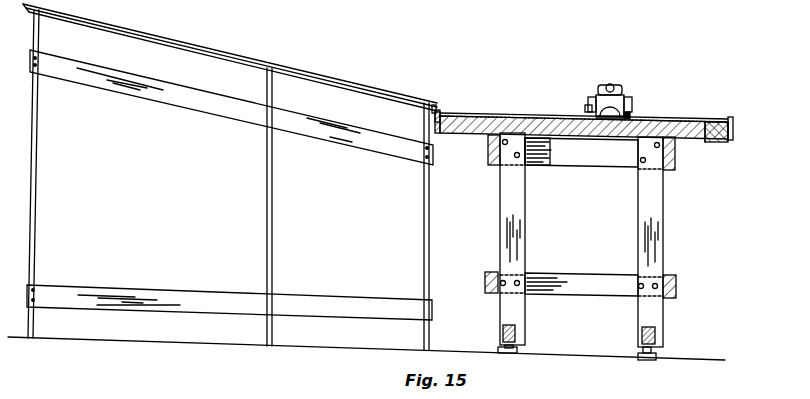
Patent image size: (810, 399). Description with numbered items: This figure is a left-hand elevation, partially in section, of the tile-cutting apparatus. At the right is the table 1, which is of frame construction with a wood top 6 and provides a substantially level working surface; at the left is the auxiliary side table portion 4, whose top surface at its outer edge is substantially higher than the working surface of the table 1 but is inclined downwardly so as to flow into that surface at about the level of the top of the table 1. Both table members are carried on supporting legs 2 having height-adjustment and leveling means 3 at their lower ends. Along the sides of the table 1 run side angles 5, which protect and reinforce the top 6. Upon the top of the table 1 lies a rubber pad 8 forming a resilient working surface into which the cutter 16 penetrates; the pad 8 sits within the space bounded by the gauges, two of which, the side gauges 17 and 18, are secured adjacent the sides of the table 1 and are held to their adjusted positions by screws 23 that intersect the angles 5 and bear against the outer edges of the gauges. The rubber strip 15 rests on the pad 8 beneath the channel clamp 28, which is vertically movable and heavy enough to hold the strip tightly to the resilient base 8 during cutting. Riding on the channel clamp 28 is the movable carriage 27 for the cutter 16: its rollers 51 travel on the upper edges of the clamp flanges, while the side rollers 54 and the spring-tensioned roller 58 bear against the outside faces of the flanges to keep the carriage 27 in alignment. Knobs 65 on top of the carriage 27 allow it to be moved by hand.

The table 1 is at (581, 217).
The supporting legs 2 is at (500, 229).
The height-adjustment and leveling means 3 is at (517, 350).
The auxiliary side table portion 4 is at (230, 180).
The side angles 5 is at (439, 134).
The wood top 6 is at (552, 140).
The rubber pad 8 is at (668, 120).
The strip 15 is at (232, 54).
The cutter 16 is at (623, 119).
The side gauge 17 is at (712, 121).
The side gauge 18 is at (439, 110).
The screws 23 is at (435, 113).
The movable carriage 27 is at (603, 86).
The channel clamp 28 is at (606, 122).
The rollers 51 is at (590, 100).
The rollers 54 is at (627, 112).
The roller 58 is at (588, 108).
The knobs 65 is at (610, 84).